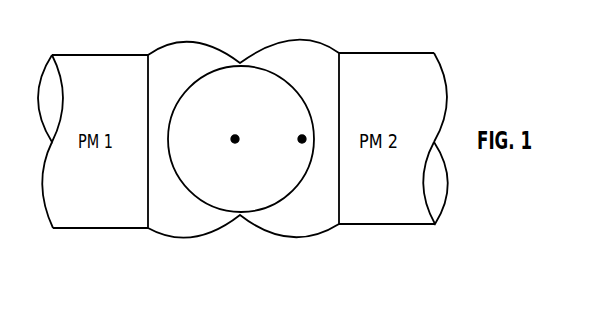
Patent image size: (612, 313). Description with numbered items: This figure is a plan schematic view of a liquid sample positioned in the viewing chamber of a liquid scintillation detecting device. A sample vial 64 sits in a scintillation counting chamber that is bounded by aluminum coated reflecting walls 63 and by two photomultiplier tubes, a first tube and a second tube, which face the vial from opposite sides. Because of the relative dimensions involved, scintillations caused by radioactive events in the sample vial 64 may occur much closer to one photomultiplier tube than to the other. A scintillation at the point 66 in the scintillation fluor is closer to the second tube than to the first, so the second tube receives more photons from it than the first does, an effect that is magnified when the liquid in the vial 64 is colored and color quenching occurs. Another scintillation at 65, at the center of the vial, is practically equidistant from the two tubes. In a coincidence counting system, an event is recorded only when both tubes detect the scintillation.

The aluminum coated reflecting walls 63 is at (190, 44).
The sample vial 64 is at (202, 202).
The scintillation at the center of the sample vial 65 is at (235, 134).
The scintillation point near PM2 66 is at (302, 135).